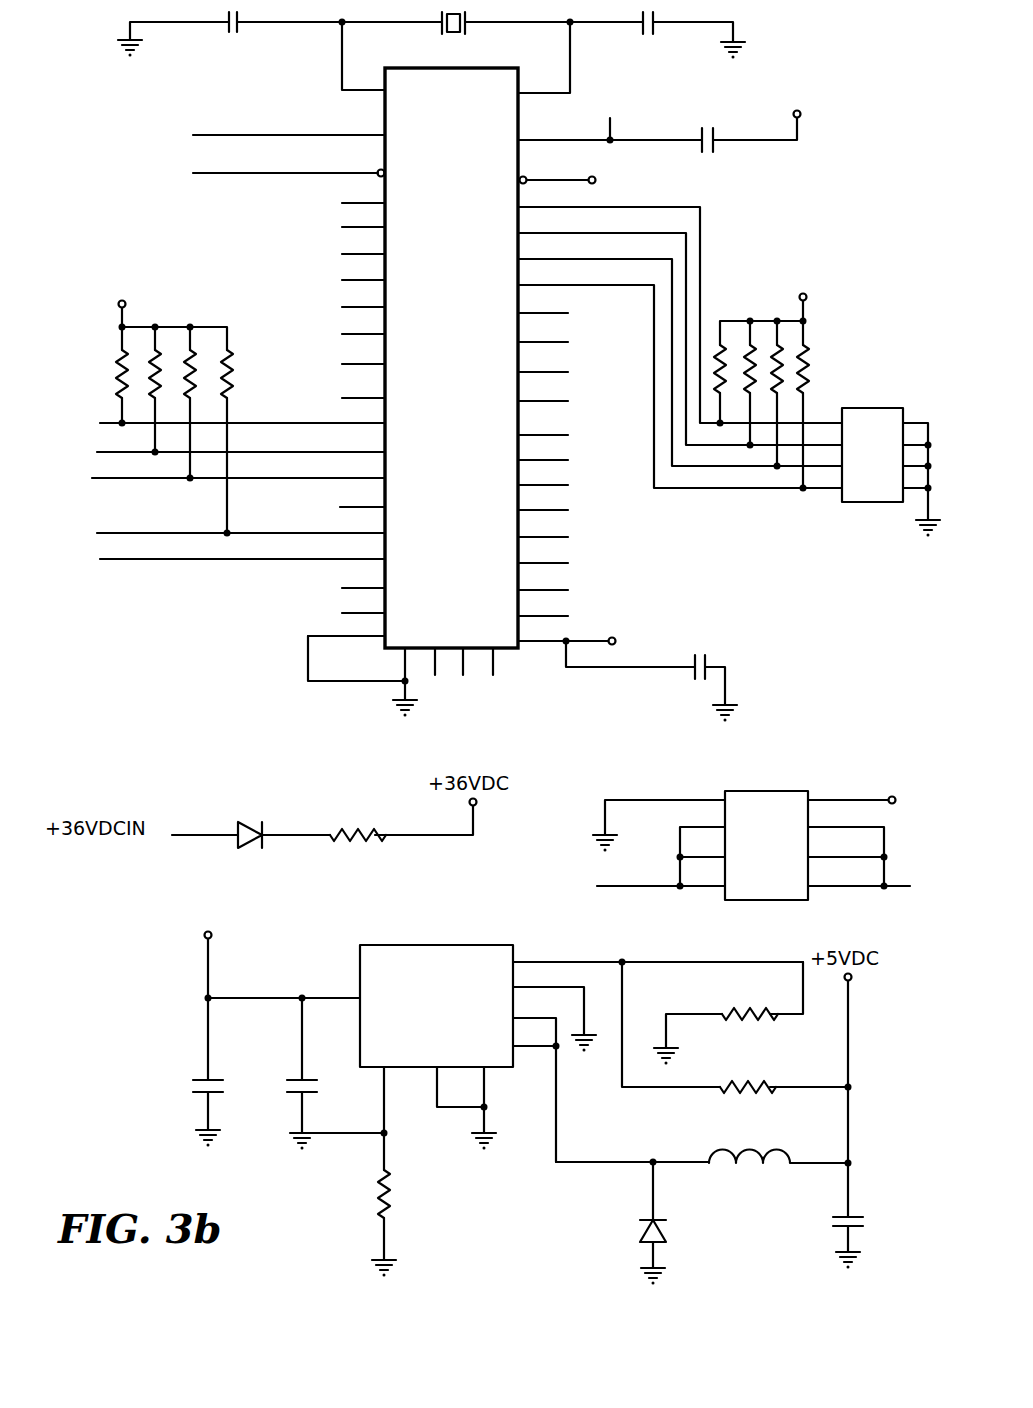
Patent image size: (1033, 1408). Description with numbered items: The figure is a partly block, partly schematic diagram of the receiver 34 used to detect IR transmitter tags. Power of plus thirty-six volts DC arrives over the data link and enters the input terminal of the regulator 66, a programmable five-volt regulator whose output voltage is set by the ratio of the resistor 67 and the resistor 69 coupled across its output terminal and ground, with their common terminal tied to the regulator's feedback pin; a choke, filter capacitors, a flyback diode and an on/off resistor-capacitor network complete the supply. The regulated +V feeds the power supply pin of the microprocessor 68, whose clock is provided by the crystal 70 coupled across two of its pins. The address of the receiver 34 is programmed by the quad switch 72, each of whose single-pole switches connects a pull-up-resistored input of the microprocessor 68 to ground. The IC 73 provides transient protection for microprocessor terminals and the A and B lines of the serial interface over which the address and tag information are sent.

The receiver 34 is at (516, 367).
The microprocessor 68 is at (628, 525).
The crystal 70 is at (447, 32).
The quad switch 72 is at (870, 497).
The IC 73 is at (818, 794).
The regulator 66 is at (477, 946).
The resistor 67 is at (730, 1097).
The resistor 69 is at (752, 1022).